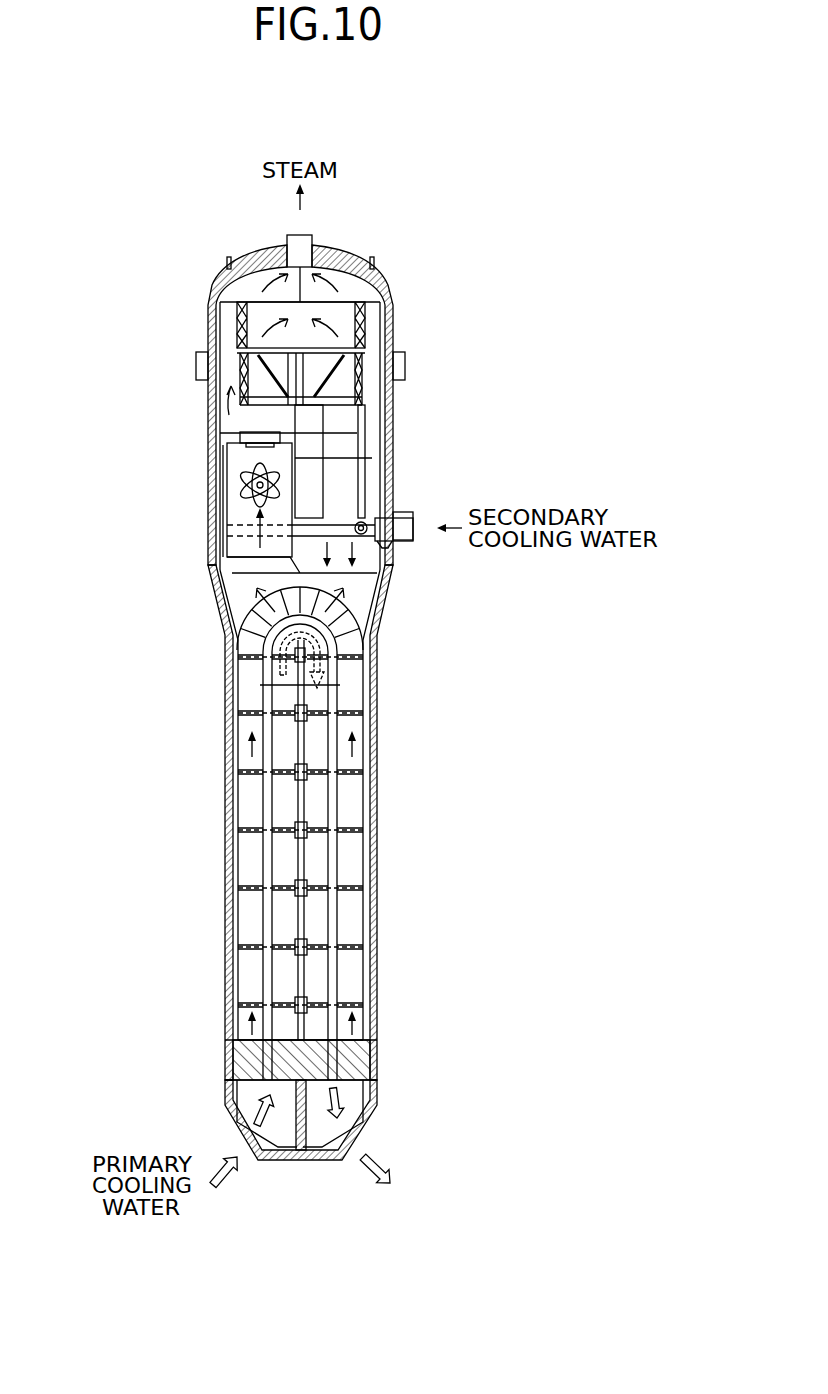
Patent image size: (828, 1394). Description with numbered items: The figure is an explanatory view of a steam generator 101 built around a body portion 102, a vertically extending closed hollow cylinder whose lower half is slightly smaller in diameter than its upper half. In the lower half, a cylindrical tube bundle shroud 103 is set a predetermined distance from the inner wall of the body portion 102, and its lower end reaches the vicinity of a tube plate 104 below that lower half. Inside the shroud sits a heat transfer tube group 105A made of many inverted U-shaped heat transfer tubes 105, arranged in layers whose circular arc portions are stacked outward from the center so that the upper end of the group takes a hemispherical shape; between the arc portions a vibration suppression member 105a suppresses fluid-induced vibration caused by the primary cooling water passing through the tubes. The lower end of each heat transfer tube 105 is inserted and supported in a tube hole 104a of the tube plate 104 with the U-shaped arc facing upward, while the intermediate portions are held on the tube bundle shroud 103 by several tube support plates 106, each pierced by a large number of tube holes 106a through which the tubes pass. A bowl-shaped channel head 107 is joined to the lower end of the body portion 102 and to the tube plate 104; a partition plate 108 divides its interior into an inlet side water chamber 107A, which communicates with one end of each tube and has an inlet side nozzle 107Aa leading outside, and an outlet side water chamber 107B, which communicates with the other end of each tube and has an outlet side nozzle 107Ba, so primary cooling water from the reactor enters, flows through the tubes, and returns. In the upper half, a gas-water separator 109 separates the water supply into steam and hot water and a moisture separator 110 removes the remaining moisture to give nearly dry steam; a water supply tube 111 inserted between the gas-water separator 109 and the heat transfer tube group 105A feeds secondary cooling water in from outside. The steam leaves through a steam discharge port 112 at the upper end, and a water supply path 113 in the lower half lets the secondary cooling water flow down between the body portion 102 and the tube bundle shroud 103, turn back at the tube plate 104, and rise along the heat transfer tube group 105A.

The steam generator 101 is at (467, 169).
The body portion 102 is at (208, 400).
The tube bundle shroud 103 is at (220, 603).
The tube plate 104 is at (372, 1060).
The tube hole 104a is at (345, 1044).
The heat transfer tube 105 is at (240, 795).
The vibration suppression member 105a is at (365, 620).
The heat transfer tube group 105A is at (375, 622).
The tube support plate 106 is at (350, 713).
The tube hole 106a is at (240, 645).
The channel head 107 is at (235, 1095).
The inlet side water chamber 107A is at (242, 1100).
The inlet side nozzle 107Aa is at (260, 1160).
The outlet side water chamber 107B is at (355, 1098).
The outlet side nozzle 107Ba is at (358, 1158).
The partition plate 108 is at (310, 1160).
The gas-water separator 109 is at (232, 480).
The moisture separator 110 is at (340, 330).
The water supply tube 111 is at (410, 520).
The steam discharge port 112 is at (302, 244).
The water supply path 113 is at (228, 965).